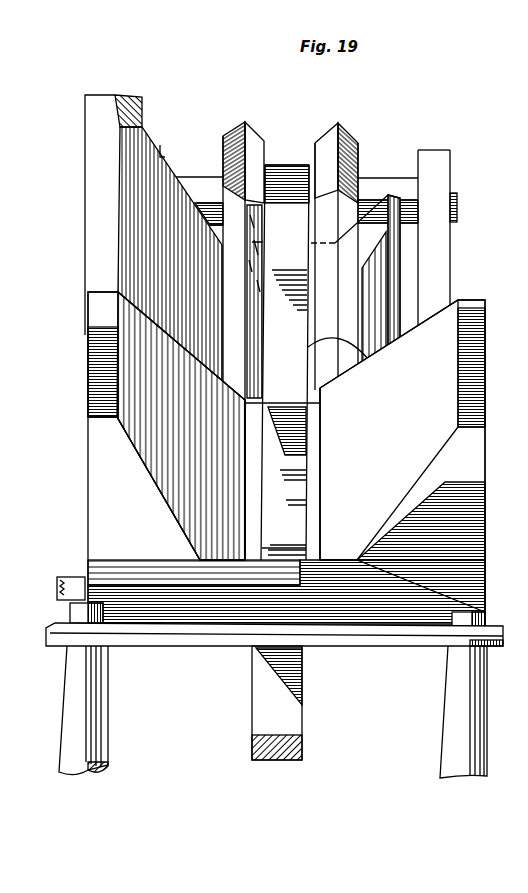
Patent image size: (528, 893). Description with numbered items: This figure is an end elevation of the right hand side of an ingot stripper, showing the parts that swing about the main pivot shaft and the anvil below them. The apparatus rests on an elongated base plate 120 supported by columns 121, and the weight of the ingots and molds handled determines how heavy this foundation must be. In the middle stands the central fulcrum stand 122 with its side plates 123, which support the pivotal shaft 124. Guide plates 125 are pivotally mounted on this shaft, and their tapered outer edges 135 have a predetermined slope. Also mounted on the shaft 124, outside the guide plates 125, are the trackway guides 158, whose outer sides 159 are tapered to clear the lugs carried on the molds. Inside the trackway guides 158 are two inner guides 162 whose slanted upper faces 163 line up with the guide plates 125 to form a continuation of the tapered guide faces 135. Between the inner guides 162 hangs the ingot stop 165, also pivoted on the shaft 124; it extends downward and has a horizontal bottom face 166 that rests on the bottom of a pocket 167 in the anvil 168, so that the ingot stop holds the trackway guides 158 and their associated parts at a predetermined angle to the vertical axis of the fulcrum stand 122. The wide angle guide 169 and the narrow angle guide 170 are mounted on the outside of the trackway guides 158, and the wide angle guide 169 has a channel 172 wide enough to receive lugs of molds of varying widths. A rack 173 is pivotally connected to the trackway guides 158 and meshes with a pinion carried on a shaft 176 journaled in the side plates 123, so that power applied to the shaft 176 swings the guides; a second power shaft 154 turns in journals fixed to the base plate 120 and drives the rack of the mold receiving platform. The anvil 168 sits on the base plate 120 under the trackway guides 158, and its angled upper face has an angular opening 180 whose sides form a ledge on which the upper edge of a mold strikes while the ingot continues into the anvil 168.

The base plate 120 is at (163, 638).
The columns 121 is at (97, 717).
The central fulcrum stand 122 is at (442, 145).
The side plates 123 is at (160, 147).
The pivotal shaft 124 is at (378, 185).
The guide plates 125 is at (306, 159).
The outer edges 135 is at (254, 140).
The shaft 154 is at (66, 576).
The trackway guides 158 is at (223, 147).
The outer sides 159 is at (233, 123).
The inner guides 162 is at (310, 253).
The upper faces 163 is at (253, 305).
The ingot stop 165 is at (282, 474).
The horizontal bottom face 166 is at (270, 560).
The pocket 167 is at (315, 560).
The anvil 168 is at (421, 523).
The wide angle guide 169 is at (98, 197).
The narrow angle guide 170 is at (363, 297).
The channel 172 is at (224, 283).
The rack 173 is at (280, 702).
The shaft 176 is at (469, 298).
The angular opening 180 is at (240, 349).